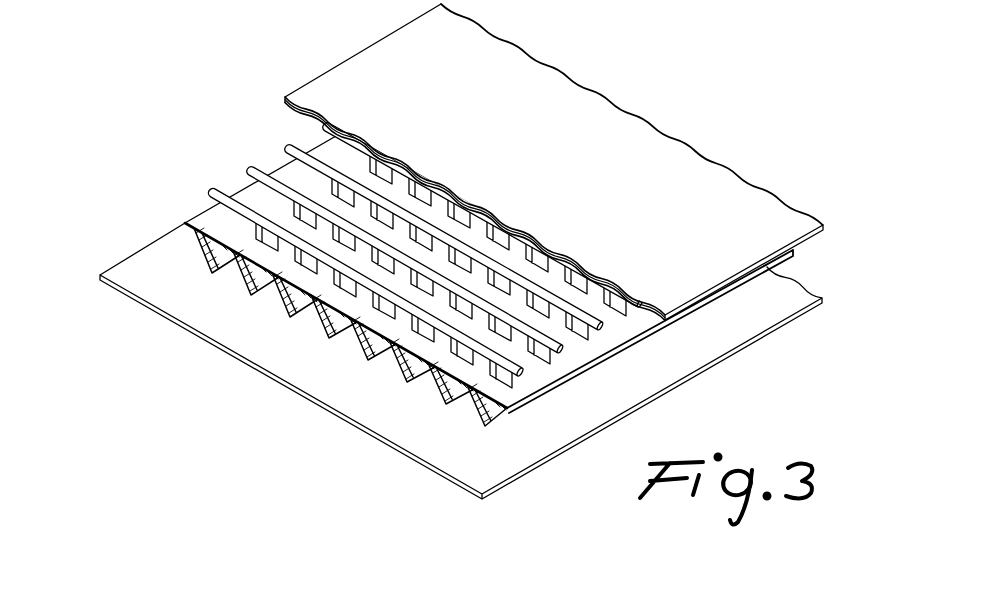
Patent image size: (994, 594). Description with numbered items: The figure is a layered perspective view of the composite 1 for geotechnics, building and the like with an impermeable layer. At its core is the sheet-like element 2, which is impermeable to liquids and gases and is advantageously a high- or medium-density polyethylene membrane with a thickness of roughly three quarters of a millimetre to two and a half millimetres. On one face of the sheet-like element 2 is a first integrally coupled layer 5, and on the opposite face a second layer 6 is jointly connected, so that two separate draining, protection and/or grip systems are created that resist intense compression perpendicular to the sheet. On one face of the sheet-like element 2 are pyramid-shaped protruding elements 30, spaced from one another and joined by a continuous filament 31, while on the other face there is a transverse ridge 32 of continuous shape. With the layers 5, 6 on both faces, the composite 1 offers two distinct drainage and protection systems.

The composite 1 is at (452, 251).
The sheet-like element 2 is at (437, 275).
The first integrally coupled layer 5 is at (330, 83).
The second layer 6 is at (162, 262).
The pyramid-shaped protruding elements 30 is at (198, 238).
The continuous filament 31 is at (258, 170).
The transverse ridge 32 is at (252, 293).